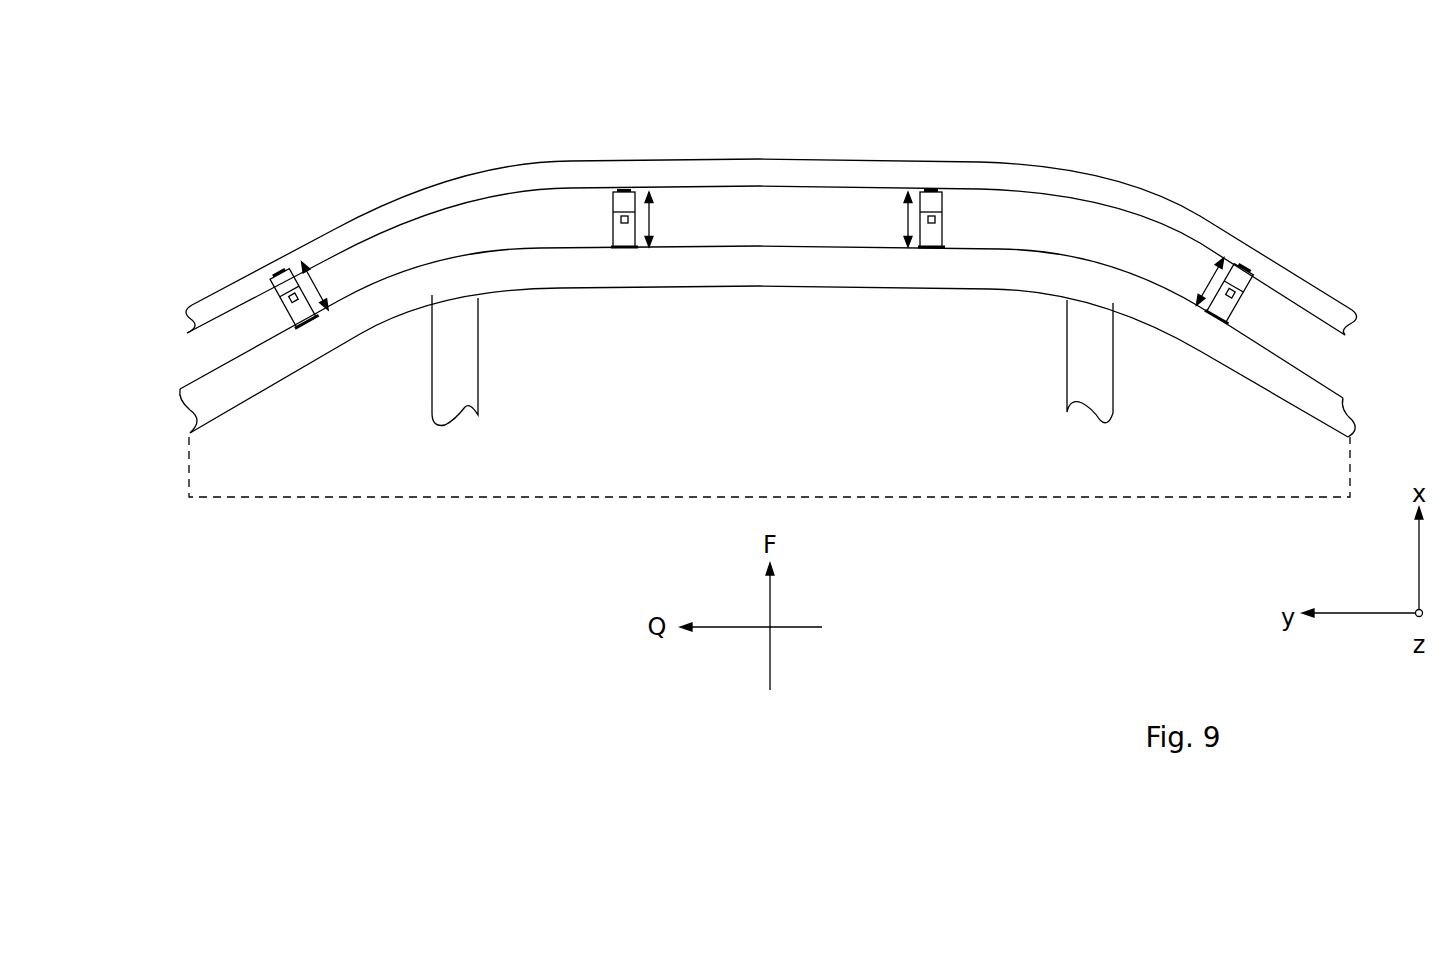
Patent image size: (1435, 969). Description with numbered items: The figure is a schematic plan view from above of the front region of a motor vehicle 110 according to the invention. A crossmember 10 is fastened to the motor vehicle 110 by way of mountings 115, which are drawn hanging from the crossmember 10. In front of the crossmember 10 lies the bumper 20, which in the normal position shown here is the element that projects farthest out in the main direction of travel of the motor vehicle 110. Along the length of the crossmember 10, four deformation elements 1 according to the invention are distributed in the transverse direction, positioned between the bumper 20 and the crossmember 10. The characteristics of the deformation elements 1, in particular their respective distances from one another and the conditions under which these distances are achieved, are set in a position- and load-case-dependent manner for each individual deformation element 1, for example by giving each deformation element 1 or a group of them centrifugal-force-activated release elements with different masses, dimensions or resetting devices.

The deformation element 1 is at (593, 200).
The crossmember 10 is at (253, 375).
The bumper 20 is at (742, 177).
The motor vehicle 110 is at (791, 392).
The mounting 115 is at (450, 370).